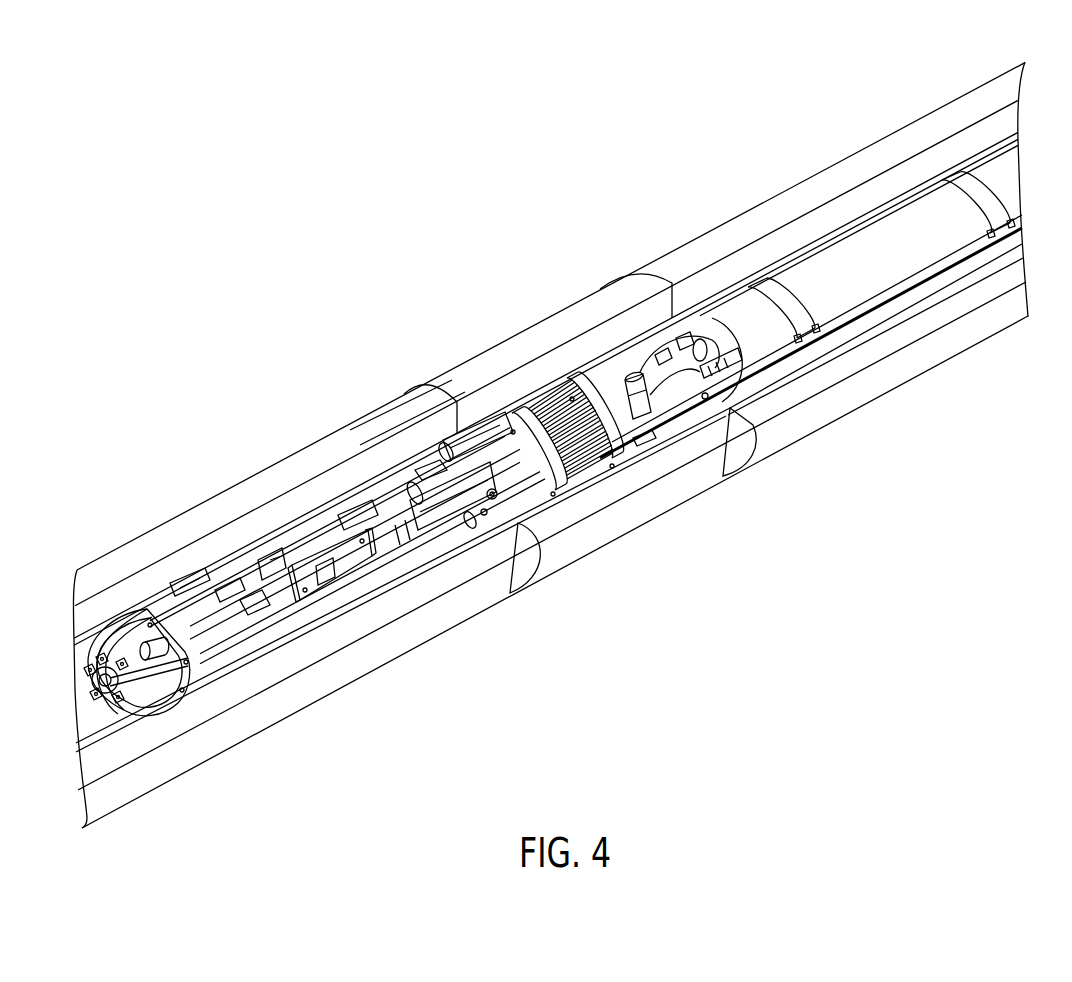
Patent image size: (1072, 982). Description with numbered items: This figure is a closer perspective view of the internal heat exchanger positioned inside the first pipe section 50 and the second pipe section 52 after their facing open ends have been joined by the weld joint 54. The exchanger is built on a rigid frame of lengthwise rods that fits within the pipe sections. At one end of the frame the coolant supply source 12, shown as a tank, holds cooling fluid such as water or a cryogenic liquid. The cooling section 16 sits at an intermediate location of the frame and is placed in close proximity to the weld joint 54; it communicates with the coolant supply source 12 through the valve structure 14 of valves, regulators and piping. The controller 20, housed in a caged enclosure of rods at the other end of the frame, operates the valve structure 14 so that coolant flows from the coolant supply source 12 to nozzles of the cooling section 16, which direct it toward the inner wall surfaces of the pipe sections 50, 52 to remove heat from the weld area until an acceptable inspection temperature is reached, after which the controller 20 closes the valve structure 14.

The coolant supply source 12 is at (830, 277).
The valve structure 14 is at (636, 393).
The cooling section 16 is at (578, 455).
The controller 20 is at (340, 577).
The first pipe section 50 is at (428, 630).
The second pipe section 52 is at (866, 390).
The weld joint 54 is at (523, 343).